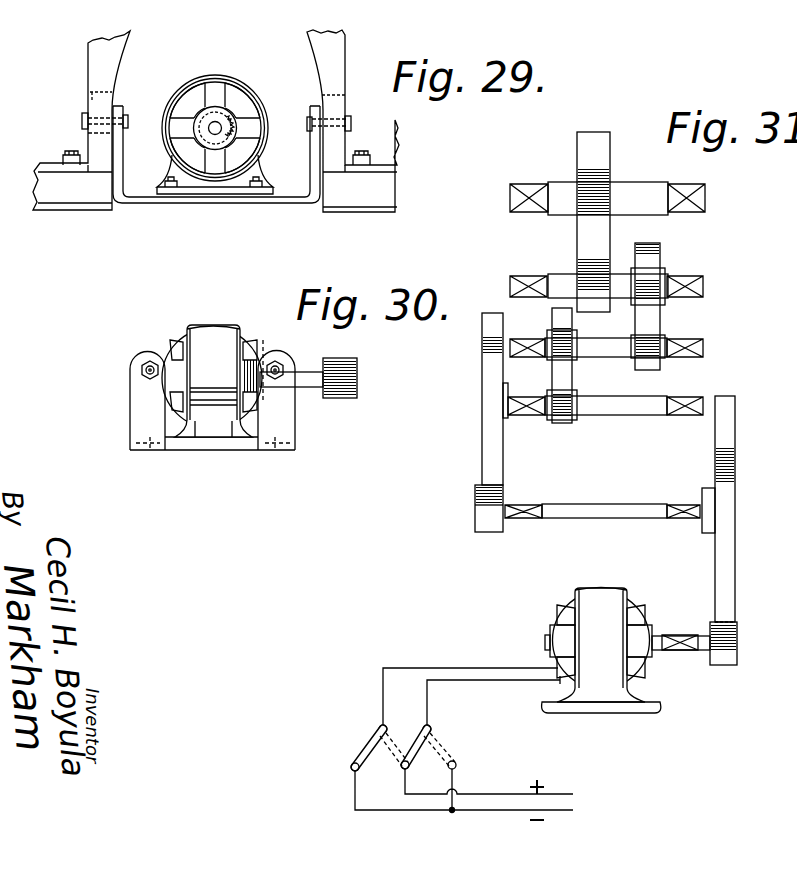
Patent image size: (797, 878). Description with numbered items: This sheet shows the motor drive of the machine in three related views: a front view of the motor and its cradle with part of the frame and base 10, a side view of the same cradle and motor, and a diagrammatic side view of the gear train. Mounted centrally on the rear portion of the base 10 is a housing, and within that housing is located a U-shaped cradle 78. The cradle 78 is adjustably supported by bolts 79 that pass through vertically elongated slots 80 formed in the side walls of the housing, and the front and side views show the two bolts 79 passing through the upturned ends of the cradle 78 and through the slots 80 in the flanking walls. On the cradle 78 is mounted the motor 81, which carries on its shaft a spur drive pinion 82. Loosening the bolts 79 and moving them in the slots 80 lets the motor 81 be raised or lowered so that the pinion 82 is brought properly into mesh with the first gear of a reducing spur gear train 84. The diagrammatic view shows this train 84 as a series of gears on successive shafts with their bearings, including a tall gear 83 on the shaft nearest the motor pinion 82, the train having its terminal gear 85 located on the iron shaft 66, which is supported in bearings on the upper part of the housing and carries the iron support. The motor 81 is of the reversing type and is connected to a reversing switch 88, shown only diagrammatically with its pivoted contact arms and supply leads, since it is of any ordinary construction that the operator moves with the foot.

In FIG. 29, the base 10 is at (85, 211).
In FIG. 31, the iron shaft 66 is at (607, 198).
In FIG. 29, the U-shaped cradle 78 is at (213, 204).
In FIG. 30, the U-shaped cradle 78 is at (195, 450).
In FIG. 29, the bolts 79 is at (82, 121).
In FIG. 30, the bolts 79 is at (146, 372).
In FIG. 29, the vertically elongated slots 80 is at (92, 93).
In FIG. 29, the motor 81 is at (213, 75).
In FIG. 30, the motor 81 is at (212, 381).
In FIG. 31, the motor 81 is at (601, 651).
In FIG. 29, the spur drive pinion 82 is at (233, 124).
In FIG. 30, the spur drive pinion 82 is at (357, 383).
In FIG. 31, the spur drive pinion 82 is at (738, 640).
In FIG. 31, the gear 83 is at (735, 573).
In FIG. 31, the reducing spur gear train 84 is at (603, 376).
In FIG. 31, the terminal gear 85 is at (578, 160).
In FIG. 31, the reversing switch 88 is at (422, 736).